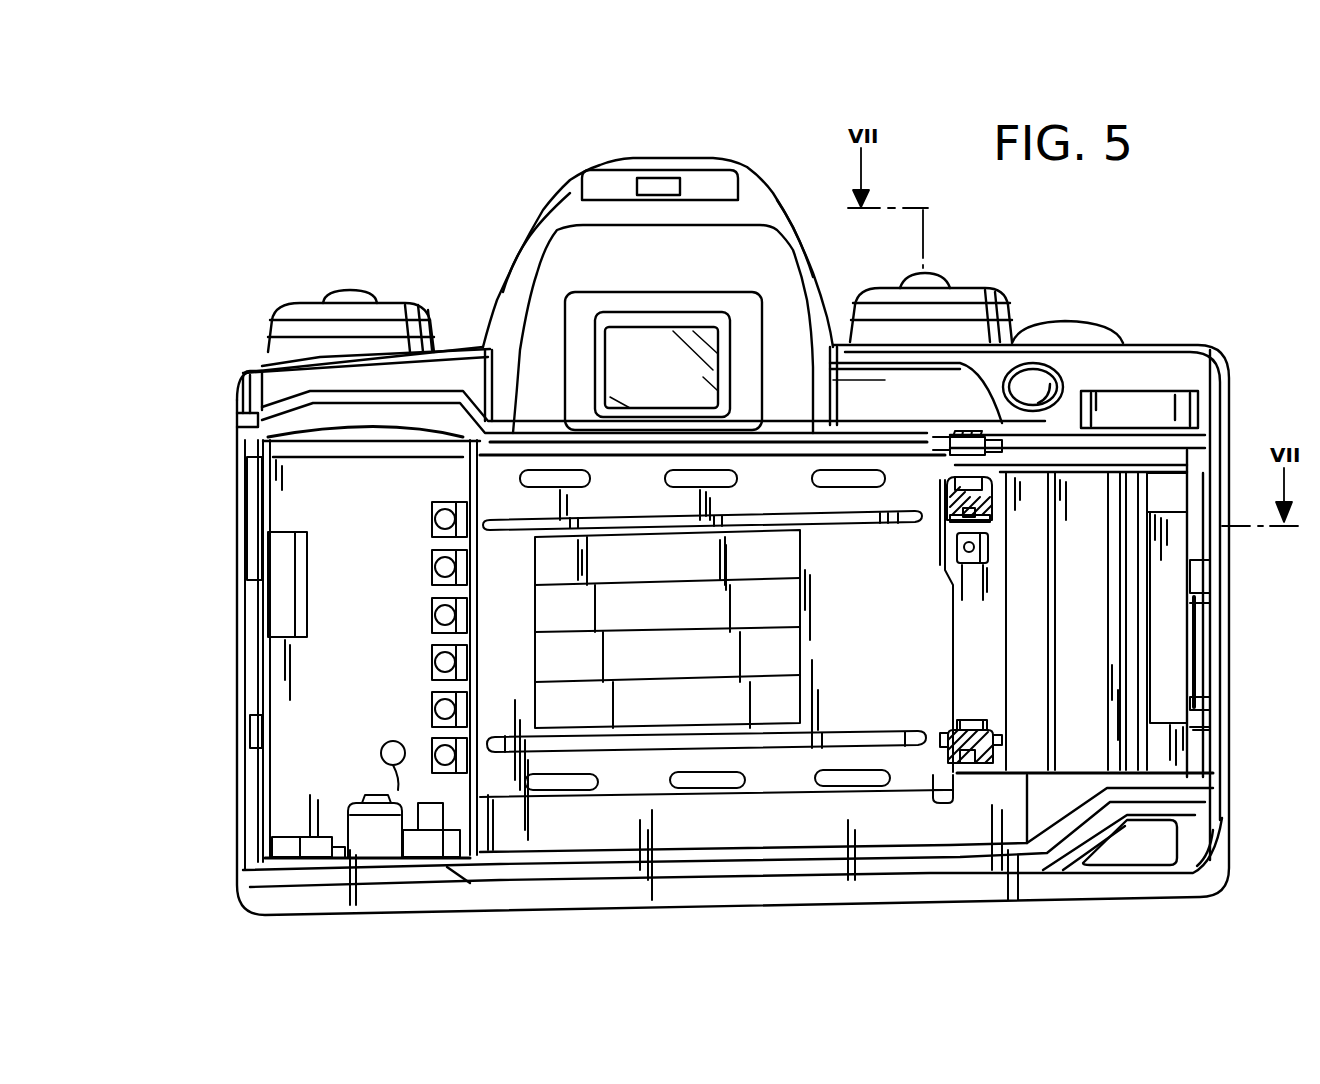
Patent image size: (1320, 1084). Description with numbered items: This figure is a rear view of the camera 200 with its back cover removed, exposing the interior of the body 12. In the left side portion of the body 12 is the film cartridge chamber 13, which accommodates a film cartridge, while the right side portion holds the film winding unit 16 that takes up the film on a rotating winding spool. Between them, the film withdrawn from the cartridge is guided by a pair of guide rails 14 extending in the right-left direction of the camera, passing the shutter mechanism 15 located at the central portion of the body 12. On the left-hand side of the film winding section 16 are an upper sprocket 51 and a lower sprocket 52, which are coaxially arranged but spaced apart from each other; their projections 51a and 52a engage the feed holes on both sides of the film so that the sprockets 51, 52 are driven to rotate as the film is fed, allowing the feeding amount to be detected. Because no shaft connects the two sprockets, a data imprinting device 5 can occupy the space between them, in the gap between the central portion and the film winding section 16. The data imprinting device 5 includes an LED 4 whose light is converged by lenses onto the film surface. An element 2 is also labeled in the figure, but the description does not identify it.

The camera 200 is at (1193, 274).
The sprocket / film feed member 2 is at (943, 730).
The LED 4 is at (967, 435).
The data imprinting device 5 is at (968, 568).
The body 12 is at (622, 790).
The film cartridge chamber 13 is at (300, 700).
The guide rails 14 is at (838, 740).
The shutter mechanism 15 is at (775, 617).
The film winding unit 16 is at (1130, 615).
The sprocket 51 is at (995, 498).
The projections 51a is at (990, 517).
The sprocket 52 is at (992, 758).
The projections 52a is at (990, 730).